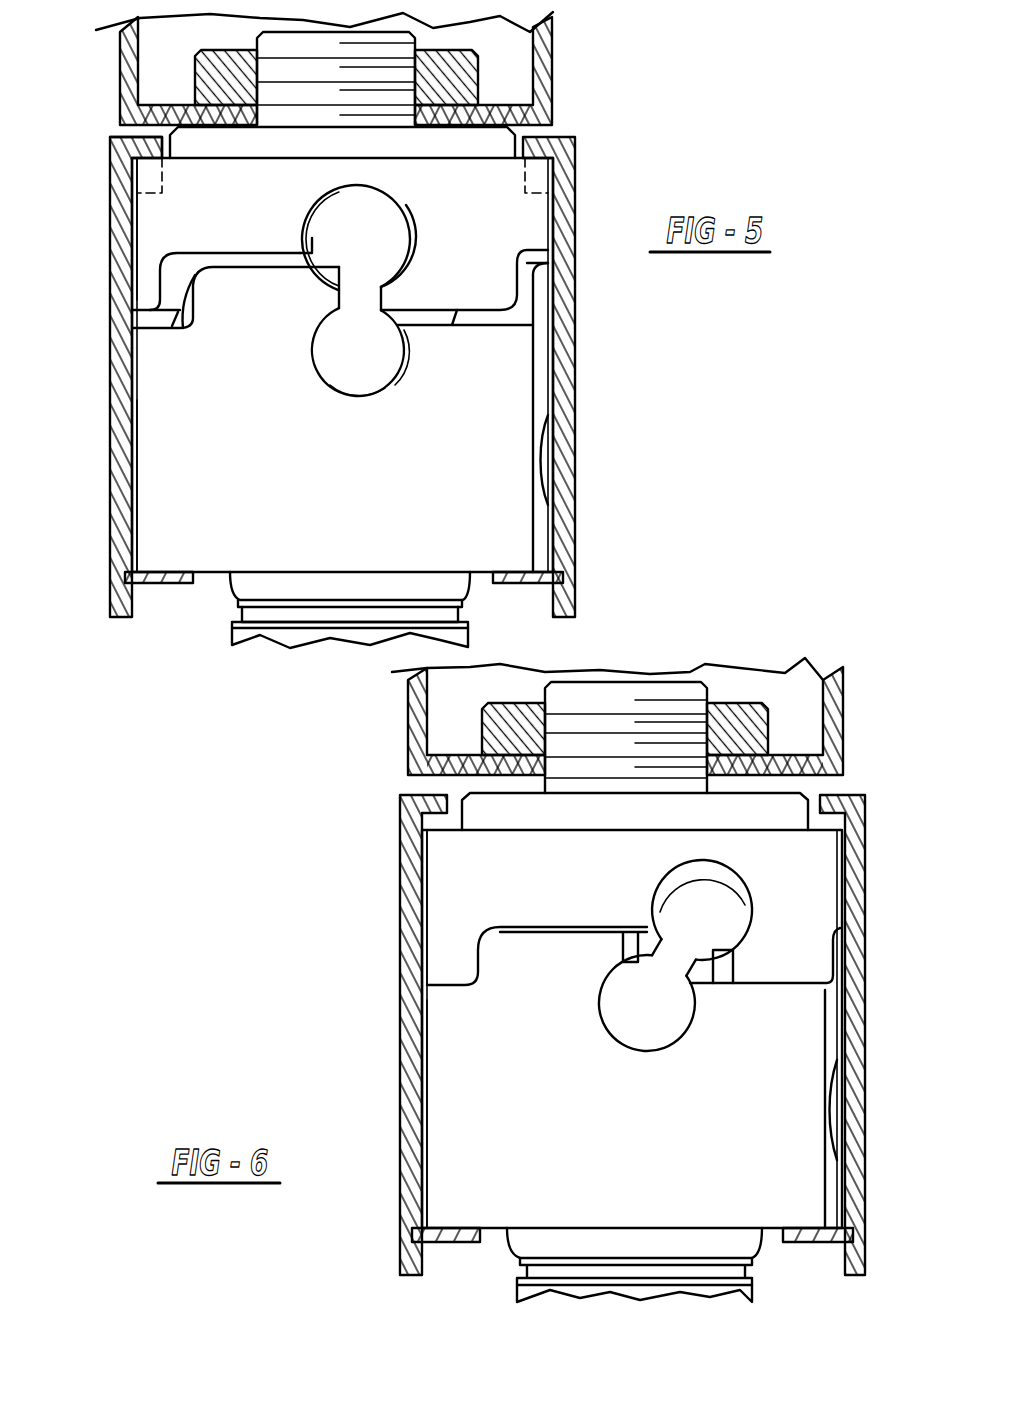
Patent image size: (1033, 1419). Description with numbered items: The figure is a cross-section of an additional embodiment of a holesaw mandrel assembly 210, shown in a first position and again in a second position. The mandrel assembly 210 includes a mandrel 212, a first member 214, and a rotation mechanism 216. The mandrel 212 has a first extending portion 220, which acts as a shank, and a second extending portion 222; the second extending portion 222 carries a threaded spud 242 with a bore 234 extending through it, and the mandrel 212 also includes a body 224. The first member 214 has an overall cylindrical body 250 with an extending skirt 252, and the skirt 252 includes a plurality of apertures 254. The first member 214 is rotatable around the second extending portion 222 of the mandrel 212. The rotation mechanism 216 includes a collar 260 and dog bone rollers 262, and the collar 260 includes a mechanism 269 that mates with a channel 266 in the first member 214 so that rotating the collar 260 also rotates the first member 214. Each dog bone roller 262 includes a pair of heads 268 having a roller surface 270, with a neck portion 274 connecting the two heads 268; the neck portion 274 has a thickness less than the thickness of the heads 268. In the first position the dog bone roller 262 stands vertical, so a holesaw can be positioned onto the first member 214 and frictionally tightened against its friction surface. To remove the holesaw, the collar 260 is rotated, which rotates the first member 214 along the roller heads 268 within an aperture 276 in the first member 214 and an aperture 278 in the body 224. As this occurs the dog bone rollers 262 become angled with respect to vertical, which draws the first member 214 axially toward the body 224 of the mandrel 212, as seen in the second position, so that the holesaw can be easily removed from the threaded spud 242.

In FIG. 5, the mandrel assembly 210 is at (449, 356).
In FIG. 5, the mandrel 212 is at (233, 630).
In FIG. 5, the first member 214 is at (525, 210).
In FIG. 6, the first member 214 is at (800, 870).
In FIG. 5, the rotation mechanism 216 is at (580, 356).
In FIG. 6, the rotation mechanism 216 is at (870, 1050).
In FIG. 5, the first extending portion 220 is at (312, 632).
In FIG. 5, the second extending portion 222 is at (548, 62).
In FIG. 6, the second extending portion 222 is at (810, 794).
In FIG. 5, the body 224 is at (185, 488).
In FIG. 6, the body 224 is at (488, 1130).
In FIG. 5, the bore 234 is at (425, 40).
In FIG. 5, the threaded spud 242 is at (290, 65).
In FIG. 6, the threaded spud 242 is at (670, 693).
In FIG. 5, the cylindrical body 250 is at (152, 203).
In FIG. 6, the cylindrical body 250 is at (483, 872).
In FIG. 5, the skirt 252 is at (145, 282).
In FIG. 6, the skirt 252 is at (442, 965).
In FIG. 5, the apertures 254 is at (143, 297).
In FIG. 5, the collar 260 is at (563, 496).
In FIG. 5, the dog bone rollers 262 is at (452, 383).
In FIG. 6, the dog bone rollers 262 is at (640, 1016).
In FIG. 5, the channel 266 is at (128, 178).
In FIG. 5, the heads 268 is at (381, 307).
In FIG. 5, the mechanism 269 is at (150, 168).
In FIG. 5, the roller surface 270 is at (367, 393).
In FIG. 5, the neck portion 274 is at (362, 288).
In FIG. 5, the aperture 276 is at (410, 213).
In FIG. 5, the aperture 278 is at (400, 370).